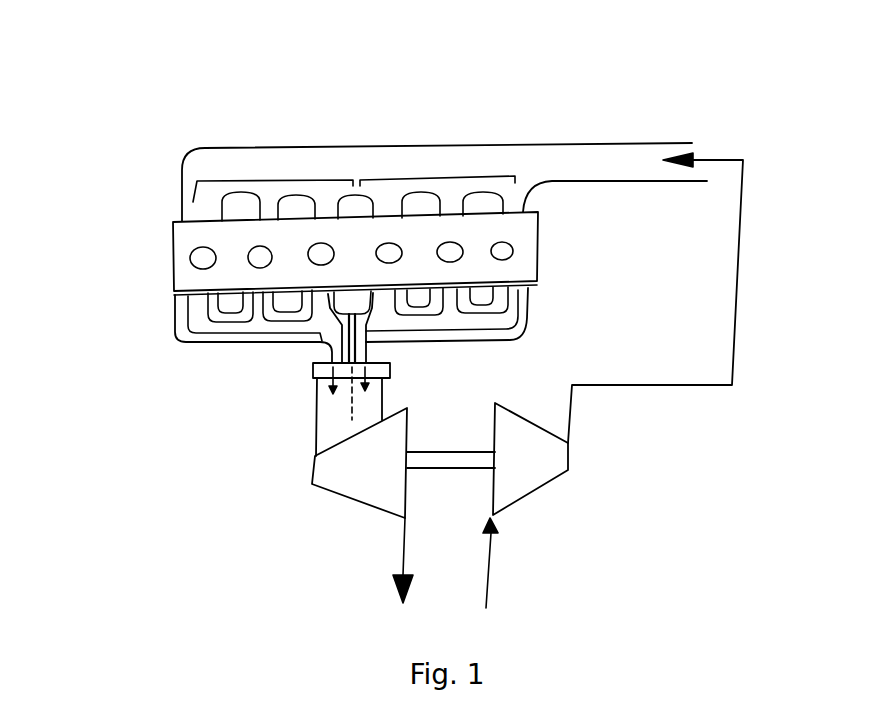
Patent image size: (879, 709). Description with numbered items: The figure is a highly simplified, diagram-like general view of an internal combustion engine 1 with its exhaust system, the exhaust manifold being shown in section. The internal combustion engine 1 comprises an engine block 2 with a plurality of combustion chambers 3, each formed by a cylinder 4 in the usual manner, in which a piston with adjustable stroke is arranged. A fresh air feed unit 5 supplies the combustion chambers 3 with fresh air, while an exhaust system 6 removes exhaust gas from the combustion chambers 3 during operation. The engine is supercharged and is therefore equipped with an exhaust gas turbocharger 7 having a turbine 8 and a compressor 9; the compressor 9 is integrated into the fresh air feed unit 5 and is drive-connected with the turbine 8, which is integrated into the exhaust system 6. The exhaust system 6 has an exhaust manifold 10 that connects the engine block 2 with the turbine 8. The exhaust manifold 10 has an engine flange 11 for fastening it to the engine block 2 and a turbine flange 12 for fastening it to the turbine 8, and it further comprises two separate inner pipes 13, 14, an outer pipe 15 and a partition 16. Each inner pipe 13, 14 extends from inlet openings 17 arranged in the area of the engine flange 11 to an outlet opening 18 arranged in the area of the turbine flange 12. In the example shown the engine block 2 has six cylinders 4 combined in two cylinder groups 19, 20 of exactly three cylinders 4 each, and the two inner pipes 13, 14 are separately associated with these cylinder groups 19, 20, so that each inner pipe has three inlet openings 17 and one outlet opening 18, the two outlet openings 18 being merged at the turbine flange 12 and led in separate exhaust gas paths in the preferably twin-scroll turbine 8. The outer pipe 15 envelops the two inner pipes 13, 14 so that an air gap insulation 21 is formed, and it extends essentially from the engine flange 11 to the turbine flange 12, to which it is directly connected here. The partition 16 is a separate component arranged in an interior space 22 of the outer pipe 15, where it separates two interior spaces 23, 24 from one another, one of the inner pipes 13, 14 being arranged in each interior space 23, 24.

The internal combustion engine 1 is at (128, 127).
The engine block 2 is at (165, 240).
The combustion chambers 3 is at (218, 254).
The cylinder 4 is at (218, 269).
The fresh air feed unit 5 is at (531, 138).
The exhaust system 6 is at (277, 351).
The exhaust gas turbocharger 7 is at (546, 499).
The turbine 8 is at (352, 478).
The compressor 9 is at (522, 437).
The exhaust manifold 10 is at (541, 308).
The engine flange 11 is at (183, 297).
The turbine flange 12 is at (393, 372).
The inner pipe 13 is at (177, 337).
The inner pipe 14 is at (517, 320).
The outer pipe 15 is at (207, 345).
The partition 16 is at (457, 337).
The inlet opening 17 is at (330, 296).
The outlet opening 18 is at (317, 343).
The cylinder group 19 is at (275, 181).
The cylinder group 20 is at (428, 178).
The air gap insulation 21 is at (208, 345).
The interior space 22 is at (233, 345).
The interior space 23 is at (183, 328).
The interior space 24 is at (523, 323).